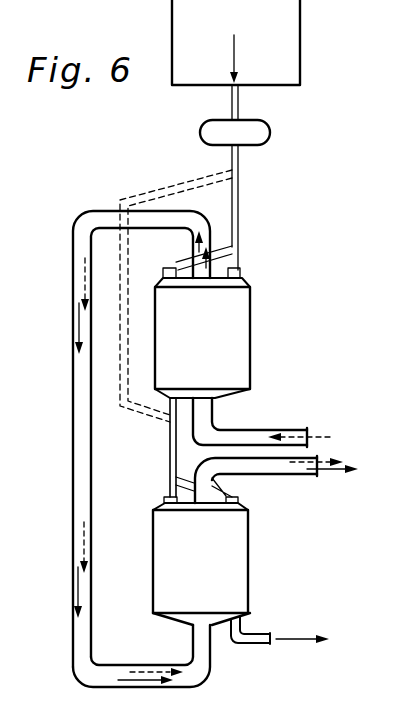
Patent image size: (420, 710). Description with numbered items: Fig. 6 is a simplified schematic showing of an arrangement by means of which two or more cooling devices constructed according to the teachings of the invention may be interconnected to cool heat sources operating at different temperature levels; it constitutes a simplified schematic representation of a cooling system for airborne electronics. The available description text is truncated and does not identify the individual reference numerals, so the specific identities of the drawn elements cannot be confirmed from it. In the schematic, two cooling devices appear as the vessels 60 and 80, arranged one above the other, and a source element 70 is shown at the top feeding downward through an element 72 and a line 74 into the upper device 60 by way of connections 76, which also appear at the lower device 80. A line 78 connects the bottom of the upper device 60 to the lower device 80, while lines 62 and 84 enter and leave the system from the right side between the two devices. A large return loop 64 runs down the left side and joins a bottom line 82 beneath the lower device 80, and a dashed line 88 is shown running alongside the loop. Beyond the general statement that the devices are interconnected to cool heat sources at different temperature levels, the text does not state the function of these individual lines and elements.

The first vessel 60 is at (212, 350).
The inlet pipe 62 is at (252, 430).
The recirculation pipe 64 is at (107, 210).
The feed source 70 is at (279, 41).
The valve 72 is at (272, 127).
The feed pipe 74 is at (240, 197).
The nozzles 76 is at (165, 270).
The transfer pipe 78 is at (169, 461).
The second vessel 80 is at (212, 565).
The return pipe 82 is at (118, 665).
The outlet pipe 84 is at (264, 475).
The bypass line 88 is at (181, 186).